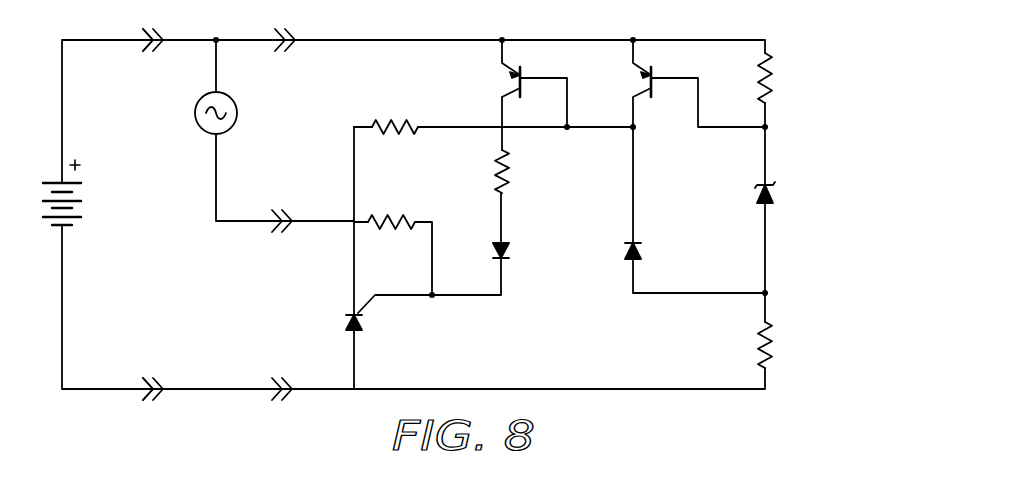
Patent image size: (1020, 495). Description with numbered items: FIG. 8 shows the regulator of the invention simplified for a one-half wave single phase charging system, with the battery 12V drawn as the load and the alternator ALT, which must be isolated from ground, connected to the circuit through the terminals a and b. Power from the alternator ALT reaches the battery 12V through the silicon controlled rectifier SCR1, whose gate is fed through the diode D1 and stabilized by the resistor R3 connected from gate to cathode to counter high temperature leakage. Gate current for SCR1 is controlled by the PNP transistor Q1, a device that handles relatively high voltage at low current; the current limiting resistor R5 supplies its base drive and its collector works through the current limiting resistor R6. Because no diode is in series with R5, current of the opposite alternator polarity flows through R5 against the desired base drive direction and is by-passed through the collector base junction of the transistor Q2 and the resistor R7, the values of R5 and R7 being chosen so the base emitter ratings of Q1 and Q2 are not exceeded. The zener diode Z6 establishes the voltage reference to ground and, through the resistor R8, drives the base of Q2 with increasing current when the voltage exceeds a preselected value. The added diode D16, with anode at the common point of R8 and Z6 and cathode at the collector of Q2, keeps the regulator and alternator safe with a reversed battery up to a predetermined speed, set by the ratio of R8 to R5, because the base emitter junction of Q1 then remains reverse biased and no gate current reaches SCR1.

The alternator terminal a is at (159, 46).
The alternator terminal b is at (159, 384).
The battery 12V is at (81, 192).
The alternator ALT is at (224, 101).
The resistor R5 is at (395, 115).
The resistor R3 is at (391, 209).
The current limiting resistor R6 is at (517, 171).
The transistor Q1 is at (534, 83).
The transistor Q2 is at (699, 83).
The diode D1 is at (516, 254).
The silicon controlled rectifier SCR1 is at (389, 316).
The diode D16 is at (655, 253).
The resistor R7 is at (780, 78).
The zener diode Z6 is at (780, 193).
The resistor R8 is at (780, 345).